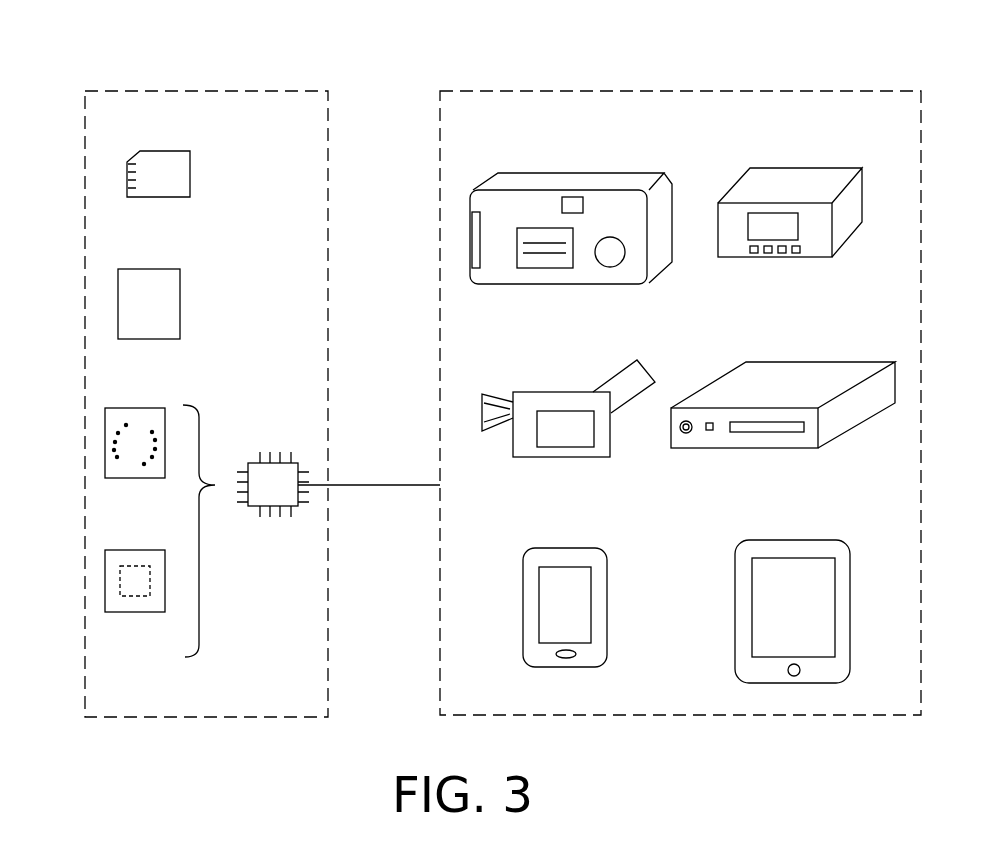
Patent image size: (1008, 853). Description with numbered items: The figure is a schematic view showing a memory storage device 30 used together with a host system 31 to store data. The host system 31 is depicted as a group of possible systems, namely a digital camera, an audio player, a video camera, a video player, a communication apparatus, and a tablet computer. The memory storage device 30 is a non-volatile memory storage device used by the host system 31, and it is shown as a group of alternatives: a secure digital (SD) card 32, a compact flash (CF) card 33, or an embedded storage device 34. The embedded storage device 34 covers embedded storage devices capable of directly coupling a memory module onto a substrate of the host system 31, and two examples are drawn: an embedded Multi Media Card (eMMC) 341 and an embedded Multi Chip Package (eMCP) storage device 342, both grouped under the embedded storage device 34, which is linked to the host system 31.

The memory storage device 30 is at (212, 90).
The host system 31 is at (648, 90).
The secure digital (SD) card 32 is at (127, 180).
The compact flash (CF) card 33 is at (118, 306).
The embedded storage device 34 is at (275, 461).
The embedded Multi Media Card (eMMC) 341 is at (105, 444).
The embedded Multi Chip Package (eMCP) storage device 342 is at (105, 582).